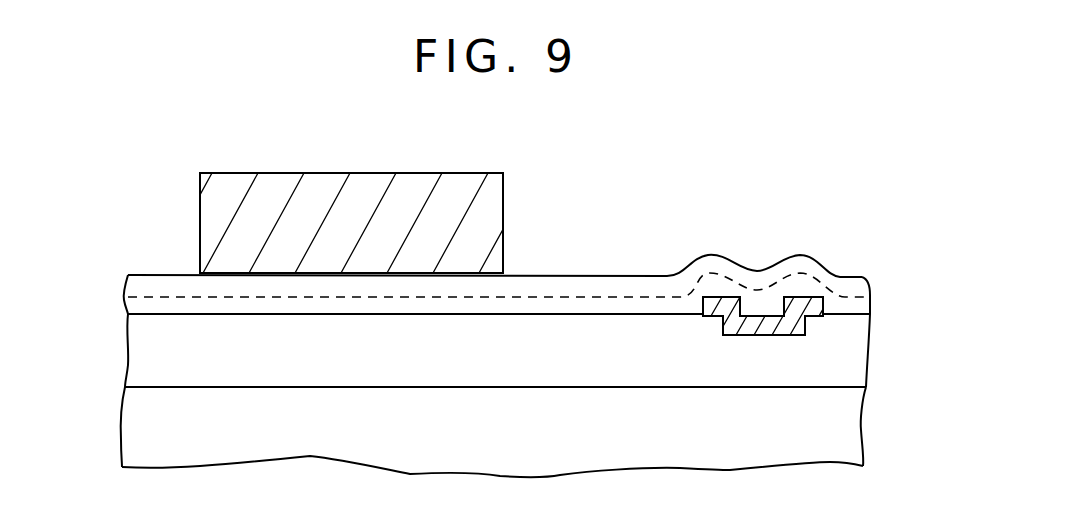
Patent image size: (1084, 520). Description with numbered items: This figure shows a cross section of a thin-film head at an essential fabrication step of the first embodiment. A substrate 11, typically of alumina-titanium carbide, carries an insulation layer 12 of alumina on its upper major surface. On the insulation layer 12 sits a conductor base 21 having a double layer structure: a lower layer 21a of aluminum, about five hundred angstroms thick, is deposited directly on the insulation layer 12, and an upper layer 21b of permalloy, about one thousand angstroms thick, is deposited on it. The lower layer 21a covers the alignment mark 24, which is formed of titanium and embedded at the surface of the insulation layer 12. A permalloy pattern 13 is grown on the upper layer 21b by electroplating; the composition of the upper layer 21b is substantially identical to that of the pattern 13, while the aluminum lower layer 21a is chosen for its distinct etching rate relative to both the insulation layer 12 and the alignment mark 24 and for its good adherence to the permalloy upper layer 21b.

The substrate 11 is at (137, 436).
The insulation layer 12 is at (137, 346).
The permalloy layer 13 is at (494, 230).
The conductor base 21 is at (884, 277).
The lower layer 21a is at (130, 300).
The upper layer 21b is at (137, 272).
The alignment mark 24 is at (757, 322).